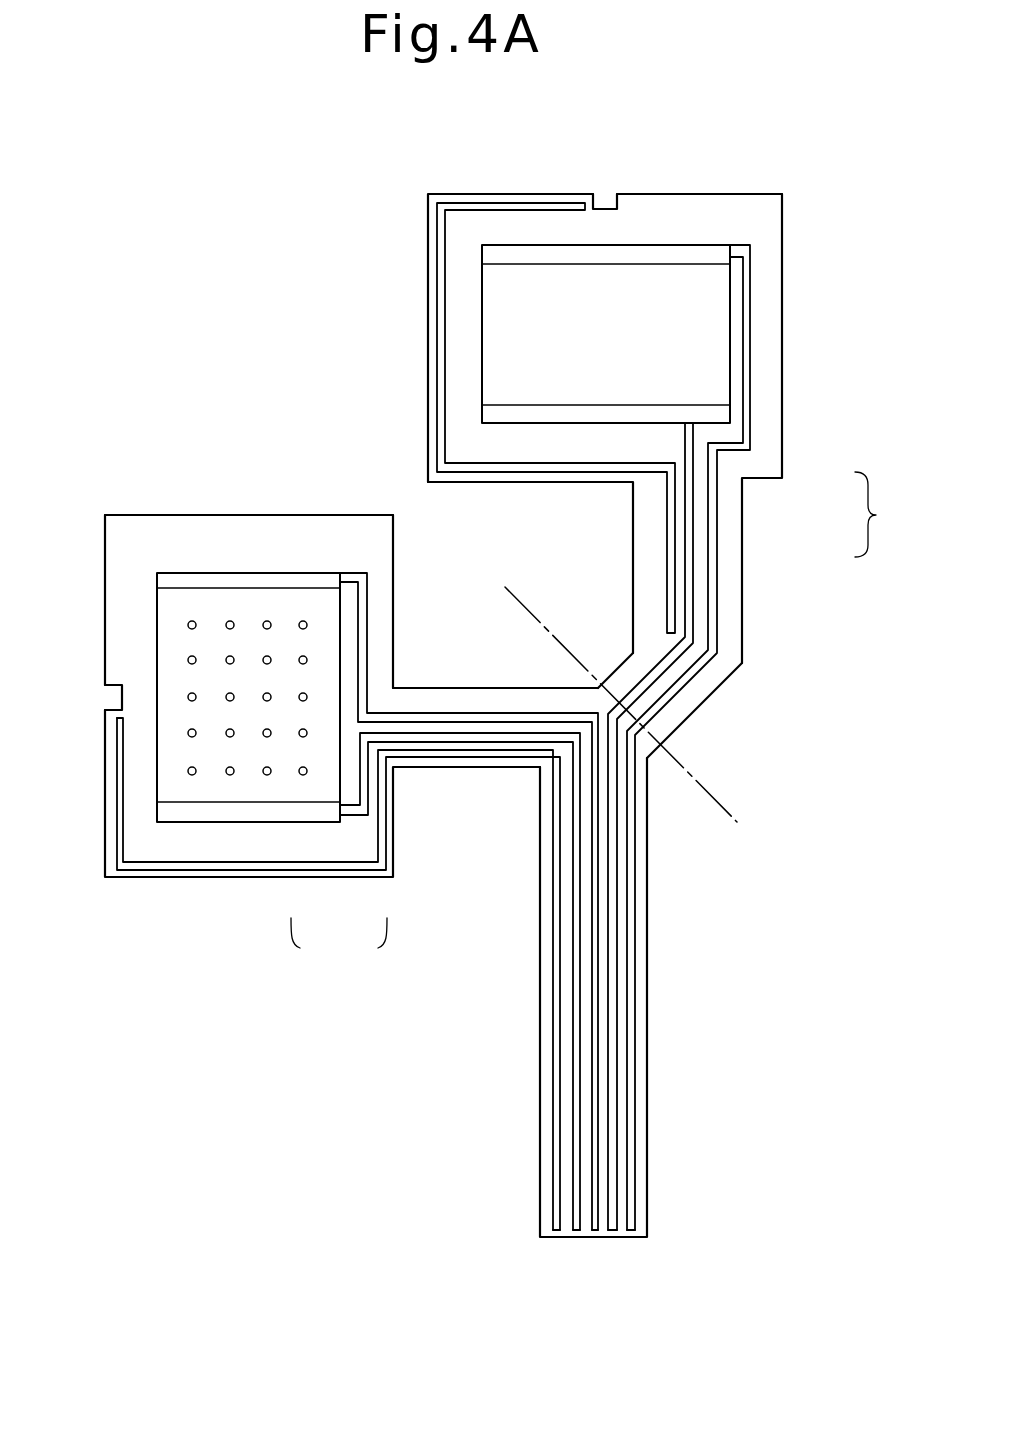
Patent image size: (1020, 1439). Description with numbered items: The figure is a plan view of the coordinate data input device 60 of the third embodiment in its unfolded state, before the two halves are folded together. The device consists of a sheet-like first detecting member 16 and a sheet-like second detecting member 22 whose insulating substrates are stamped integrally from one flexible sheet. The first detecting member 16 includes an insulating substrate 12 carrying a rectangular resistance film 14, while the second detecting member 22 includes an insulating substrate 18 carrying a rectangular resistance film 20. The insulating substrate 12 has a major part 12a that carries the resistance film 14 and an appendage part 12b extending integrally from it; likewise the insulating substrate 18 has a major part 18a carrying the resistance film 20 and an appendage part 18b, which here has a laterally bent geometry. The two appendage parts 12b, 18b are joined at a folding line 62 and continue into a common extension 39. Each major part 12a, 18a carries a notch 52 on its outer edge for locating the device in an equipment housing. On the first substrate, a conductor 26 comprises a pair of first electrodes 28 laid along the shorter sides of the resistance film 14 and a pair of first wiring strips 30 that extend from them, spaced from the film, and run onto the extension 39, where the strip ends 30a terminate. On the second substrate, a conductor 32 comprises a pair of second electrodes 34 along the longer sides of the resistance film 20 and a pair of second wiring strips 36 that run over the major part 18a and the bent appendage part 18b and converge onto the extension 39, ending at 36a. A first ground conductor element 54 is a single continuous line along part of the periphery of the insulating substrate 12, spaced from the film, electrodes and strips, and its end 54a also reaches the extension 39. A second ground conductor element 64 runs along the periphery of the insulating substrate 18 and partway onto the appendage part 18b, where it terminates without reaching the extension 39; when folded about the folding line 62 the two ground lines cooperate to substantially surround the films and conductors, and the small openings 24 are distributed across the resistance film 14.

The insulating substrate 12 is at (181, 537).
The major part 12a is at (124, 537).
The appendage part 12b is at (512, 695).
The resistance film 14 is at (172, 784).
The first detecting member 16 is at (231, 512).
The insulating substrate 18 is at (782, 210).
The major part 18a is at (650, 210).
The appendage part 18b is at (740, 615).
The resistance film 20 is at (495, 355).
The second detecting member 22 is at (719, 193).
The through holes 24 is at (188, 622).
The conductor 26 is at (339, 957).
The first electrodes 28 is at (276, 576).
The first wiring strips 30 is at (352, 572).
The terminal of lead conductor 30 30a is at (592, 1240).
The conductor 32 is at (884, 514).
The second electrodes 34 is at (693, 247).
The second wiring strips 36 is at (748, 343).
The terminal of lead conductor 36 36a is at (612, 1240).
The extension 39 is at (650, 1000).
The notches 52 is at (605, 198).
The first ground conductor element 54 is at (238, 868).
The terminal of ground conductor 54a is at (557, 1213).
The coordinate data input device 60 is at (285, 298).
The folding line 62 is at (735, 778).
The second ground conductor element 64 is at (440, 303).